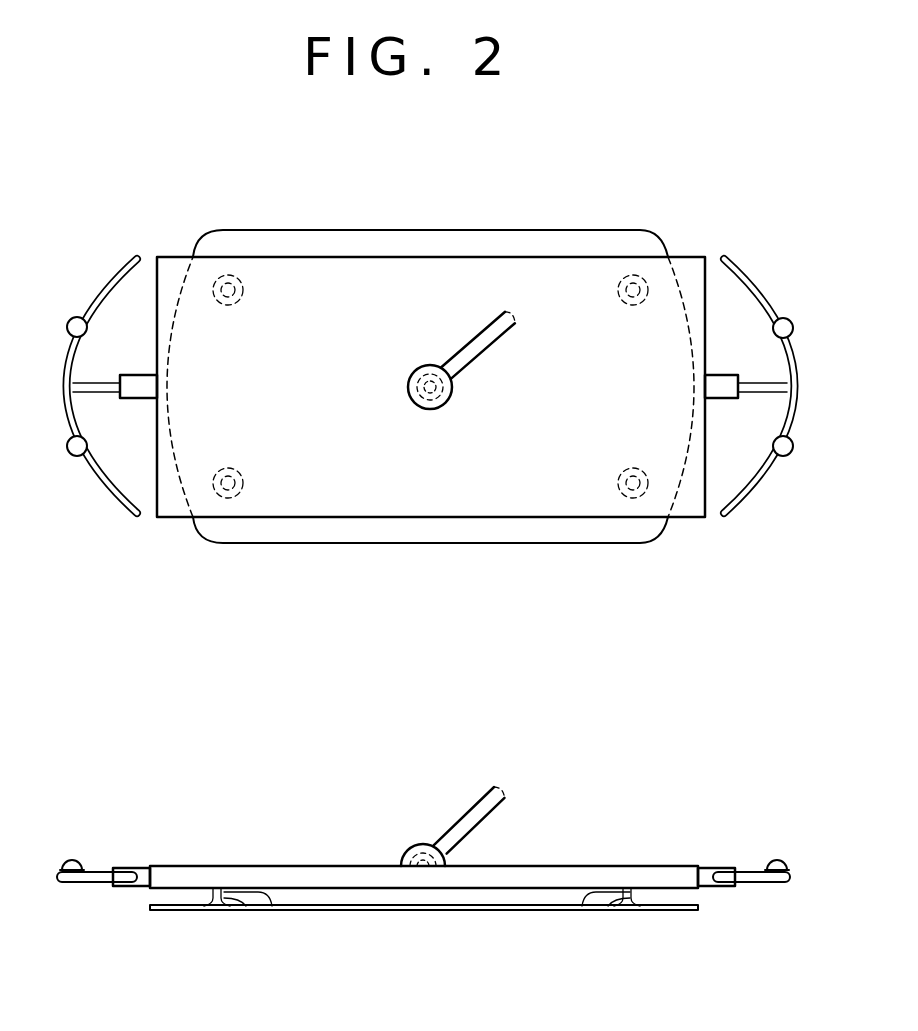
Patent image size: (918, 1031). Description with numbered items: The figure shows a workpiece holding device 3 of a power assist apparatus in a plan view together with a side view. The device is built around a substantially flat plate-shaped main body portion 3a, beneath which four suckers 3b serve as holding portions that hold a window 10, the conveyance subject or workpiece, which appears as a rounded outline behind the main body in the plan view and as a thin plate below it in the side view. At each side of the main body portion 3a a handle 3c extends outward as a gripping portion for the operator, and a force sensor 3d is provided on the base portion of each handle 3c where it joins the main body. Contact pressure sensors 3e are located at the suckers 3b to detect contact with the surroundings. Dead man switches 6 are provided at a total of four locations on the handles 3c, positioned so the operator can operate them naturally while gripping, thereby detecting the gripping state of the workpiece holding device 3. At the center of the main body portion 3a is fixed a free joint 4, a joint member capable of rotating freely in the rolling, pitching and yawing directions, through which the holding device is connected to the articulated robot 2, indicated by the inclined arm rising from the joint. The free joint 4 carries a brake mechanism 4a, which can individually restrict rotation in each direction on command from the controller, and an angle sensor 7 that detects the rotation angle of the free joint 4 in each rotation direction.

The articulated robot 2 is at (503, 347).
The workpiece holding device 3 is at (694, 539).
The main body portion 3a is at (315, 255).
The suckers 3b is at (228, 306).
The handles 3c is at (118, 262).
The force sensors 3d is at (138, 373).
The contact pressure sensors 3e is at (244, 290).
The free joint 4 is at (428, 365).
The brake mechanism 4a is at (453, 387).
The dead man switches 6 is at (68, 322).
The angle sensor 7 is at (430, 410).
The window 10 is at (432, 545).